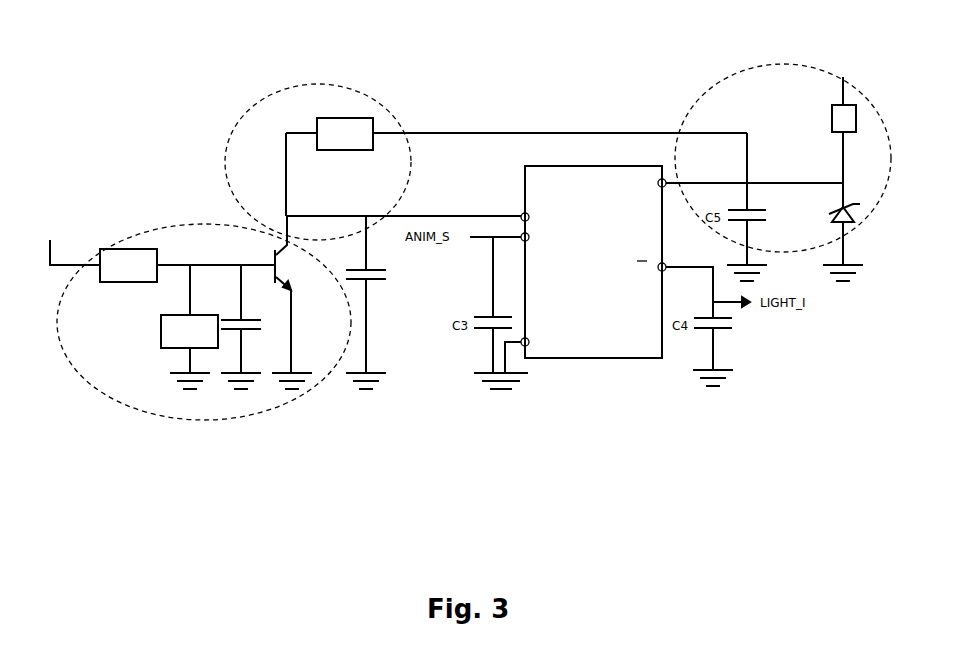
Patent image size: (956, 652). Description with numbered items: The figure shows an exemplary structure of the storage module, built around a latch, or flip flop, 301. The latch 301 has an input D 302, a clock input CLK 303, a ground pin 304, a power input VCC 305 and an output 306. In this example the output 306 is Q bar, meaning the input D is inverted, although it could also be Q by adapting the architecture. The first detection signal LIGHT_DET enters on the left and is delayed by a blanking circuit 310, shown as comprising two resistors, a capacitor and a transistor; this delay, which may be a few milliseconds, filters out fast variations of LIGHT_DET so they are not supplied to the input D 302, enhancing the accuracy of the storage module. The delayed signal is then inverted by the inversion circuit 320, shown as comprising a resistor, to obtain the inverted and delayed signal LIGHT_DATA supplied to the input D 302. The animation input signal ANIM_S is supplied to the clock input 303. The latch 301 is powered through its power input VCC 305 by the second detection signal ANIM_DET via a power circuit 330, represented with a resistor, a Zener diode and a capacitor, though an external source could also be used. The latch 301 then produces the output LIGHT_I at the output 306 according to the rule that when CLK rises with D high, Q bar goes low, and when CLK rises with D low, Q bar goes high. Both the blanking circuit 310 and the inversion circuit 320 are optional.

The latch 301 is at (572, 165).
The input D 302 is at (522, 214).
The clock input CLK 303 is at (528, 240).
The ground pin 304 is at (528, 340).
The power input VCC 305 is at (657, 186).
The output 306 is at (658, 270).
The blanking circuit 310 is at (182, 225).
The inversion circuit 320 is at (302, 83).
The power circuit 330 is at (690, 112).